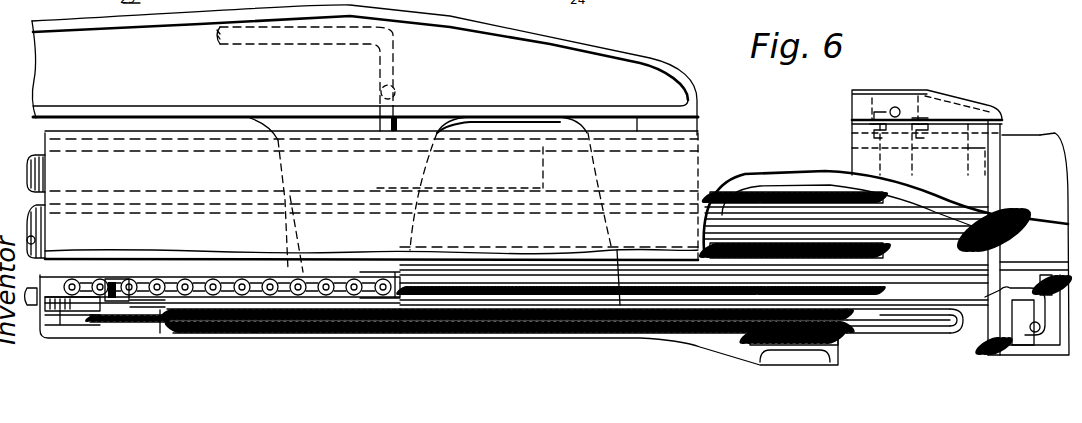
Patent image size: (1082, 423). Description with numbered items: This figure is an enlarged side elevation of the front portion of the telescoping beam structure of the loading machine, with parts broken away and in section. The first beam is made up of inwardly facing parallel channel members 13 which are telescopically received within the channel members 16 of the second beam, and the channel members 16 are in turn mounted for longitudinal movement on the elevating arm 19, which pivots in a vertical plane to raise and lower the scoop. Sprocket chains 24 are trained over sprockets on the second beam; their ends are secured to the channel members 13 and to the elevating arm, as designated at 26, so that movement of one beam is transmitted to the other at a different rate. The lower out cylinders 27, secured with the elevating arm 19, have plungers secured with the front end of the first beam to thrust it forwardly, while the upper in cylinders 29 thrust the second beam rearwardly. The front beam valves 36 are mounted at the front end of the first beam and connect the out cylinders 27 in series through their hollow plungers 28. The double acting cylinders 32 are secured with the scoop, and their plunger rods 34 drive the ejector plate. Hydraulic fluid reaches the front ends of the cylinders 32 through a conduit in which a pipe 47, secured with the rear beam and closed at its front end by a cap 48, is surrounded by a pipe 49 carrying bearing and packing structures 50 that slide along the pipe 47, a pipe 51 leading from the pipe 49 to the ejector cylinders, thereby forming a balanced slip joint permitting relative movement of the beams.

The elevating arm 19 is at (165, 22).
The in cylinders 29 is at (47, 170).
The out cylinders 27 is at (725, 197).
The hollow plungers 28 is at (765, 215).
The front beam valves 36 is at (928, 153).
The double acting cylinders 32 is at (1020, 265).
The plunger rods 34 is at (1065, 262).
The sprocket chains 24 is at (131, 318).
The bearing and packing structures 50 is at (173, 333).
The channel members 13 is at (290, 339).
The channel members 16 is at (330, 337).
The chain end securing point 26 is at (413, 283).
The pipe 51 is at (860, 327).
The pipe 47 is at (887, 327).
The cap 48 is at (953, 327).
The pipe 49 is at (708, 5).